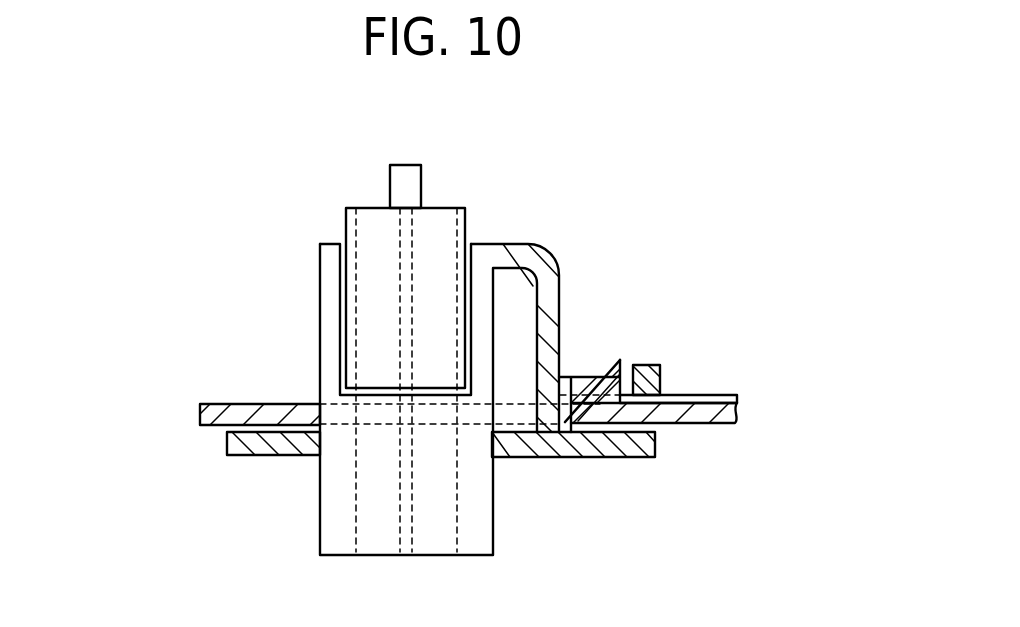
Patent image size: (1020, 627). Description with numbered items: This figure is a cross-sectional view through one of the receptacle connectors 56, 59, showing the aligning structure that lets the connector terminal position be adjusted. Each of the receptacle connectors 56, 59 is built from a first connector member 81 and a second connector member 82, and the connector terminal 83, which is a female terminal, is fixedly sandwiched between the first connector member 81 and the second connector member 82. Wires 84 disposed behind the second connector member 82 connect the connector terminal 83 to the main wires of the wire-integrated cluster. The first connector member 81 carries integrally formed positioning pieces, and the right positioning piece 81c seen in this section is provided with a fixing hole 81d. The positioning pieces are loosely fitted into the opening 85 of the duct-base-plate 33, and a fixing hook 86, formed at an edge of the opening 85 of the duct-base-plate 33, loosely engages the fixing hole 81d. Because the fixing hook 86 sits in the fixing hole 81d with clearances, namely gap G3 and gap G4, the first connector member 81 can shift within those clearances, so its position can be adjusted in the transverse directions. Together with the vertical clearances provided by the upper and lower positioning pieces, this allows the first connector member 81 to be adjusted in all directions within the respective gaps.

The receptacle connector 56 is at (301, 319).
The receptacle connector 59 is at (296, 287).
The first connector member 81 is at (474, 540).
The right positioning piece 81c is at (641, 424).
The fixing hole 81d is at (573, 405).
The second connector member 82 is at (442, 217).
The connector terminal 83 is at (413, 513).
The wires 84 is at (390, 175).
The opening 85 is at (514, 440).
The fixing hook 86 is at (600, 376).
The duct-base-plate 33 is at (215, 410).
The gap G3 is at (571, 377).
The gap G4 is at (633, 365).